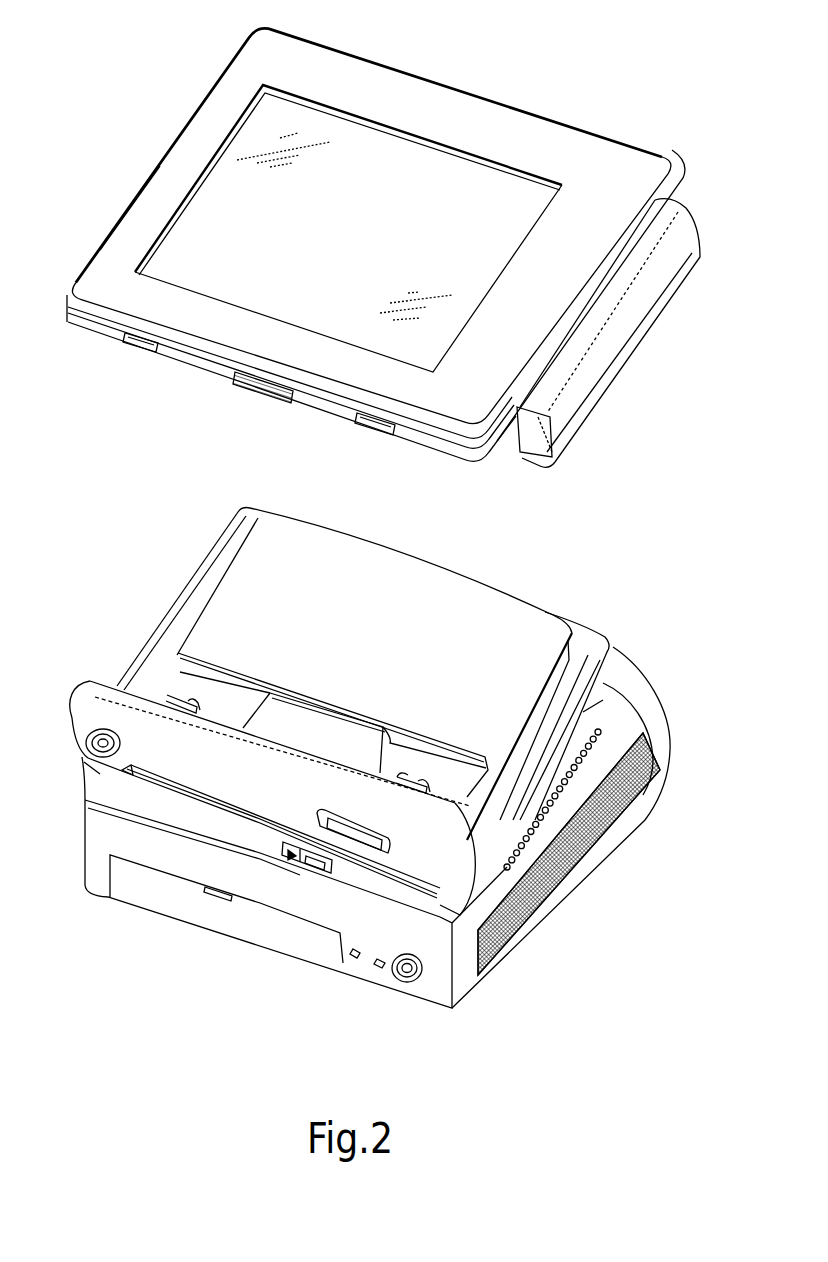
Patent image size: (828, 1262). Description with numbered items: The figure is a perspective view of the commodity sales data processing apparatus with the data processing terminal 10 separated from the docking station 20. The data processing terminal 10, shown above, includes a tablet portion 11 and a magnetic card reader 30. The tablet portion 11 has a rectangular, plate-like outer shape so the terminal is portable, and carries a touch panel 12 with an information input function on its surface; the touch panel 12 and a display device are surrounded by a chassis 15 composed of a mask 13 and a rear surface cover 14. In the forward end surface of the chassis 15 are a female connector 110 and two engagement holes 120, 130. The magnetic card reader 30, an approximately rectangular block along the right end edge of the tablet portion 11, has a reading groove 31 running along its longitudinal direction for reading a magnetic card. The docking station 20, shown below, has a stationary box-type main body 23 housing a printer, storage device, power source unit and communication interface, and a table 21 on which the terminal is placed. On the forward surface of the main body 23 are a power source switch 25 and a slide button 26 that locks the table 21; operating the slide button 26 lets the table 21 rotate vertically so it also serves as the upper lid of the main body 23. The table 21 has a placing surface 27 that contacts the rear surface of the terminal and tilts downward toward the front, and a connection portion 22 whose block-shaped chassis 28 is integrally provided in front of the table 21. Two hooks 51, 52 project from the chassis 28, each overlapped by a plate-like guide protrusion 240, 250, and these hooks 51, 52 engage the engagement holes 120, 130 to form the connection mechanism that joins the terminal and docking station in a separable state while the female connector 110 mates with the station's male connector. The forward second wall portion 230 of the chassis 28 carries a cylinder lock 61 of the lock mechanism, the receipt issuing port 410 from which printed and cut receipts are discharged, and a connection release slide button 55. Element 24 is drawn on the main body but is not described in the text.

The data processing terminal 10 is at (378, 54).
The tablet portion 11 is at (545, 118).
The touch panel 12 is at (232, 190).
The mask 13 is at (162, 182).
The rear surface cover 14 is at (88, 346).
The chassis 15 is at (110, 222).
The docking station 20 is at (638, 611).
The table 21 is at (185, 583).
The connection portion 22 is at (80, 711).
The main body 23 is at (85, 853).
The tray 24 is at (143, 897).
The power source switch 25 is at (410, 982).
The slide button 26 is at (293, 856).
The placing surface 27 is at (393, 568).
The chassis 28 is at (80, 734).
The magnetic card reader 30 is at (700, 218).
The reading groove 31 is at (520, 450).
The hook 51 is at (190, 700).
The hook 52 is at (430, 787).
The connection release slide button 55 is at (353, 840).
The cylinder lock 61 is at (78, 760).
The female connector 110 is at (262, 393).
The engagement hole 120 is at (148, 353).
The engagement hole 130 is at (372, 440).
The second wall portion 230 is at (407, 840).
The guide protrusion 240 is at (168, 693).
The guide protrusion 250 is at (408, 778).
The receipt issuing port 410 is at (160, 783).